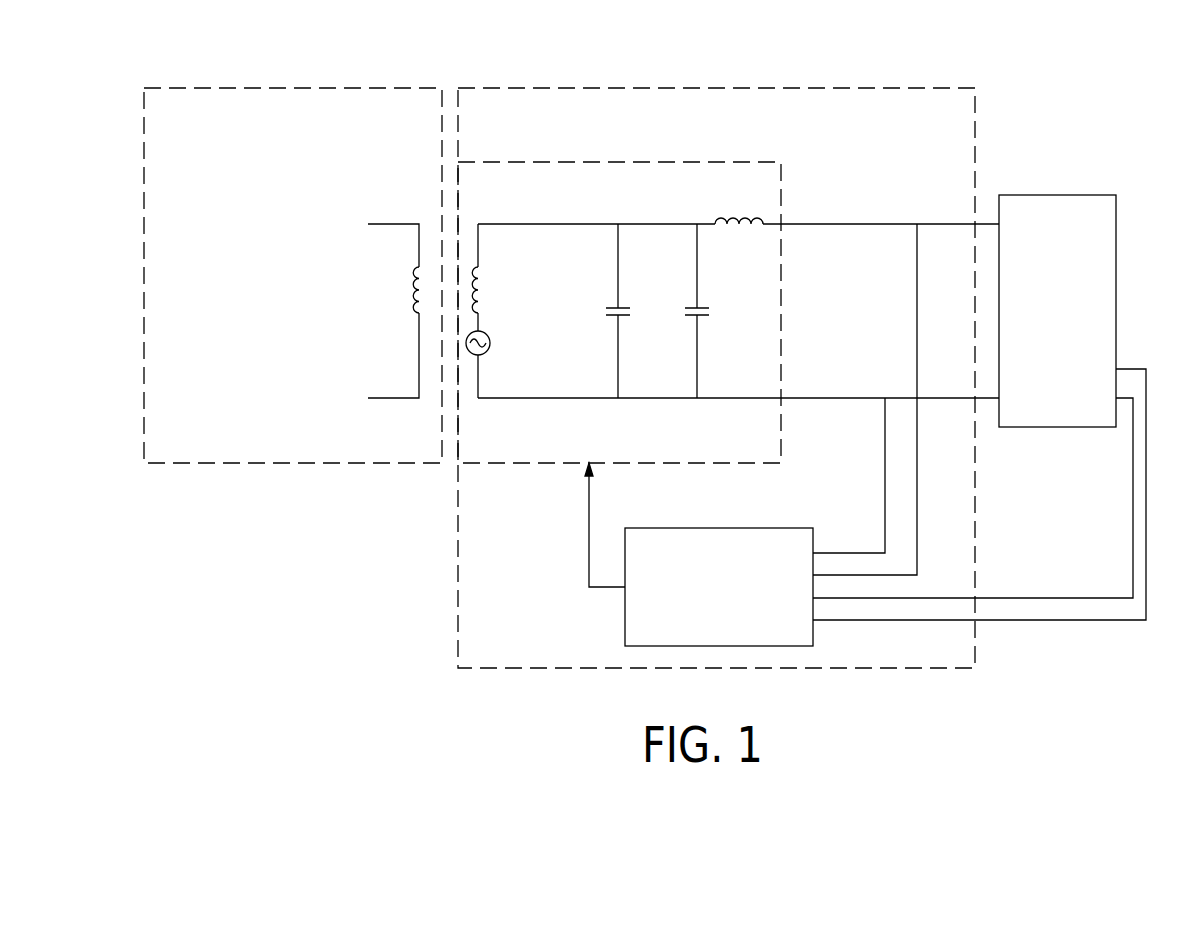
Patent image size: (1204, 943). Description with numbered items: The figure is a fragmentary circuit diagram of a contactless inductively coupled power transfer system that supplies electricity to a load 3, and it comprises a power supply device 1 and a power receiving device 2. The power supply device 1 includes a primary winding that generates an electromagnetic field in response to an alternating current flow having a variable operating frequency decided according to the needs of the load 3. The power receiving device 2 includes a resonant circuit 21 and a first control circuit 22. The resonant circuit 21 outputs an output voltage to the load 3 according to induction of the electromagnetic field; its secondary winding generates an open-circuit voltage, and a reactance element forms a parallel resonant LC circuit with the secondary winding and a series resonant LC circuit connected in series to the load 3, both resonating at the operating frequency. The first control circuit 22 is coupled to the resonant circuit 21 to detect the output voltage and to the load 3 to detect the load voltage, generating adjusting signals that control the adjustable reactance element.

The power supply device 1 is at (312, 88).
The power receiving device 2 is at (658, 88).
The resonant circuit 21 is at (748, 162).
The first control circuit 22 is at (768, 528).
The load 3 is at (1058, 195).